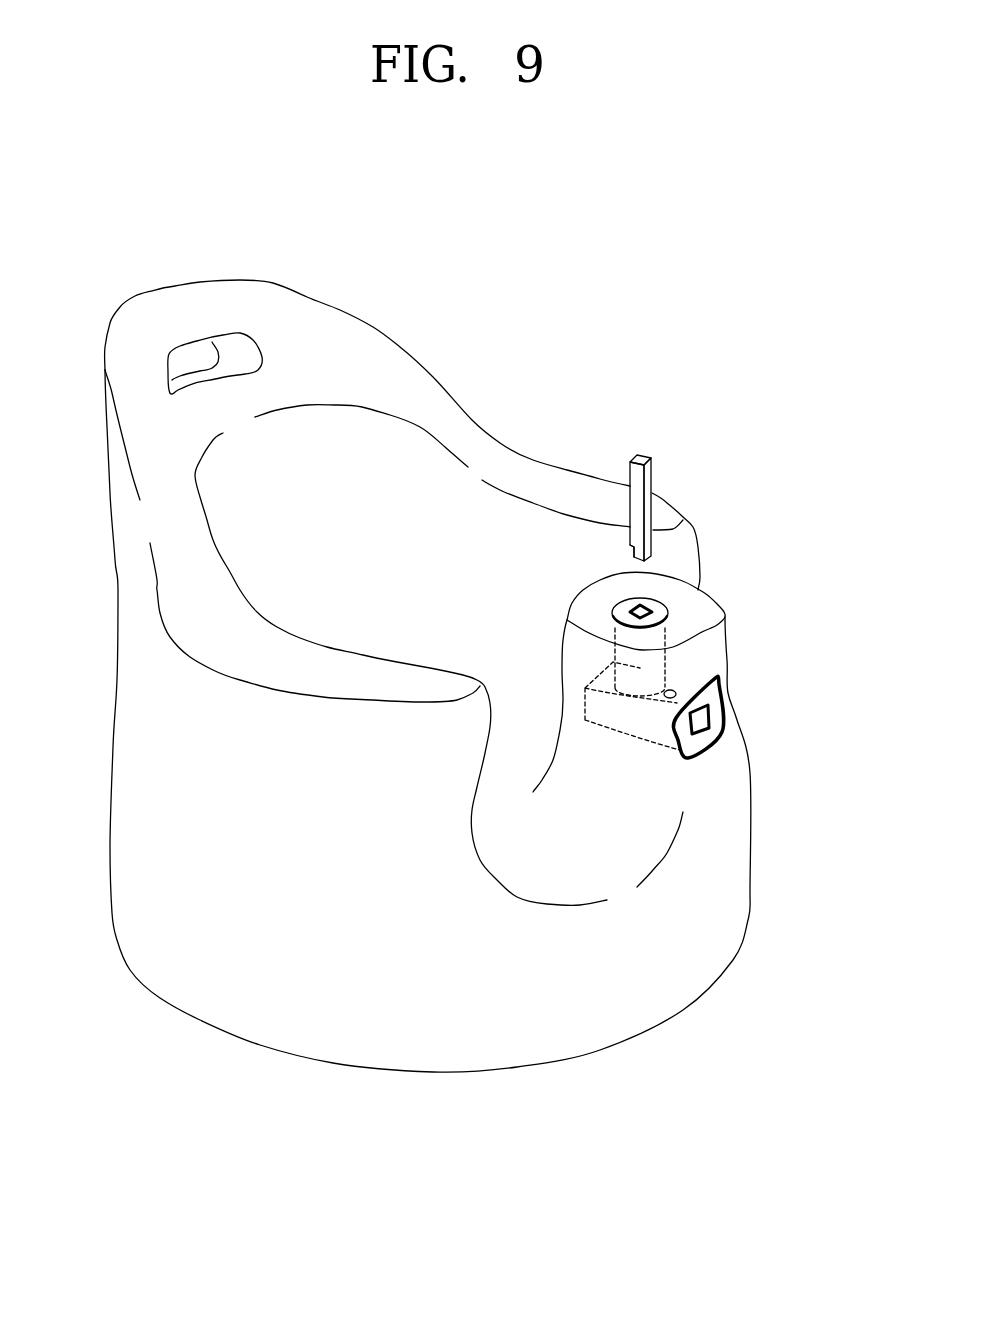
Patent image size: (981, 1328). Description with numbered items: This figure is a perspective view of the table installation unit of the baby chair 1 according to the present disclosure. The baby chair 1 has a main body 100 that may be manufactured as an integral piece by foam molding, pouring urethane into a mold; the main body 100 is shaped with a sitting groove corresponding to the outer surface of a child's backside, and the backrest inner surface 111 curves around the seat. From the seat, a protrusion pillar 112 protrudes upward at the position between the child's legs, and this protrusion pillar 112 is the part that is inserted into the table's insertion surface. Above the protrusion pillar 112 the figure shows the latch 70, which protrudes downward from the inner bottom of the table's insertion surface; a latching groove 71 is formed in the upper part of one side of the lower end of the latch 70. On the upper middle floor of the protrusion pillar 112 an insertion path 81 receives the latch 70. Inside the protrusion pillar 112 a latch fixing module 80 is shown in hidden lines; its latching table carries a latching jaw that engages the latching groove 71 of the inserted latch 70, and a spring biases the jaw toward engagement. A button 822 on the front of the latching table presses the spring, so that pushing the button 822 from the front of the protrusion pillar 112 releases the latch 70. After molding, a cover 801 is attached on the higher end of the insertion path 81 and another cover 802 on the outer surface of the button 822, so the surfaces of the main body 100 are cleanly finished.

The baby chair 1 is at (640, 357).
The main body 100 is at (735, 872).
The backrest inner surface 111 is at (428, 460).
The protrusion pillar 112 is at (698, 603).
The latch 70 is at (645, 453).
The latching groove 71 is at (630, 552).
The latch fixing module 80 is at (665, 673).
The cover 801 is at (617, 577).
The insertion path 81 is at (642, 608).
The cover 802 is at (707, 733).
The button 822 is at (703, 715).